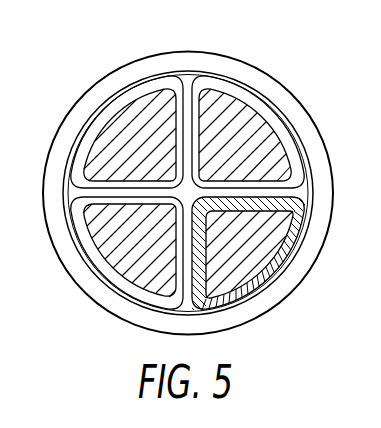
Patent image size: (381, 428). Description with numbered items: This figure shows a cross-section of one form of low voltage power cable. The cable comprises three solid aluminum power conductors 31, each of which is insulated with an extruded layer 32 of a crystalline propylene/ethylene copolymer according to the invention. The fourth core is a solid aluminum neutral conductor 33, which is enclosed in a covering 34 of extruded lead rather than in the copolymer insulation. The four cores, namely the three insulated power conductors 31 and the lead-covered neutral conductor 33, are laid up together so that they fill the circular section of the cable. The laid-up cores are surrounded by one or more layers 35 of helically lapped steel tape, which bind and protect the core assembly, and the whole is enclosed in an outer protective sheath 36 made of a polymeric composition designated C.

The solid aluminum power conductor 31 is at (118, 138).
The extruded insulating layer 32 is at (85, 142).
The solid aluminum neutral conductor 33 is at (282, 233).
The covering of extruded lead 34 is at (298, 221).
The layer of helically lapped steel tape 35 is at (285, 259).
The outer protective sheath 36 is at (280, 297).